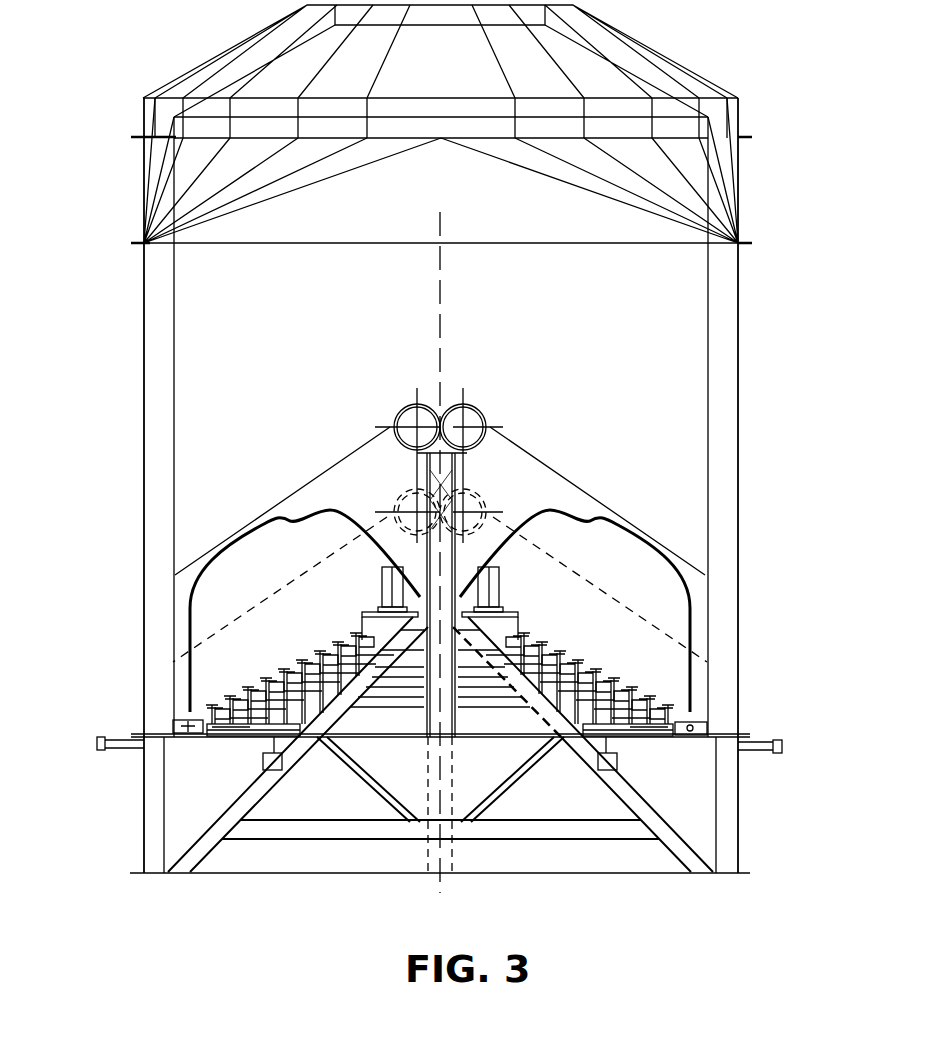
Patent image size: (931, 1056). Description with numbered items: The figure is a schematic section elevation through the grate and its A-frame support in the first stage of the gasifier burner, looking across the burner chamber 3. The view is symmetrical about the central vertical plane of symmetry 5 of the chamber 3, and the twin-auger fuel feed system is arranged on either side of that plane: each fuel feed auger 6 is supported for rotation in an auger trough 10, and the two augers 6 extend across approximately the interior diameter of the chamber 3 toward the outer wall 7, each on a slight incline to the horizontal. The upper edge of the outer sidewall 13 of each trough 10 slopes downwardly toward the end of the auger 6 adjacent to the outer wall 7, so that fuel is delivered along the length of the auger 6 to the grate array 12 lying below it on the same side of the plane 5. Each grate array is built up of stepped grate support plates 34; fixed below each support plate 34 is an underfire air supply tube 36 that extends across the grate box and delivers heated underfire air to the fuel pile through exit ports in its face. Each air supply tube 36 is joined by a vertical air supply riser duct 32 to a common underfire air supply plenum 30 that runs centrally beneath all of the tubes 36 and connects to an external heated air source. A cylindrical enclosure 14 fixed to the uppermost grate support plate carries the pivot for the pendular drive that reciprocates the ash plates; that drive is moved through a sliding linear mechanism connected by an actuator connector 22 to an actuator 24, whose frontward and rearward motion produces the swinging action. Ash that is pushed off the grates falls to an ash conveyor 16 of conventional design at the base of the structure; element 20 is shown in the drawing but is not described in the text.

The chamber 3 is at (497, 300).
The central vertical plane of symmetry 5 is at (440, 537).
The fuel feed auger 6 is at (489, 414).
The outer wall 7 is at (143, 412).
The auger trough 10 is at (482, 447).
The grate array 12 is at (603, 514).
The outer sidewall 13 is at (489, 427).
The cylindrical enclosure 14 is at (500, 590).
The ash conveyor 16 is at (690, 728).
The pipe 20 is at (753, 752).
The actuator connector 22 is at (247, 792).
The actuator 24 is at (802, 813).
The underfire air supply plenum 30 is at (635, 736).
The air supply riser duct 32 is at (597, 690).
The grate support plate 34 is at (573, 660).
The underfire air supply tube 36 is at (523, 627).